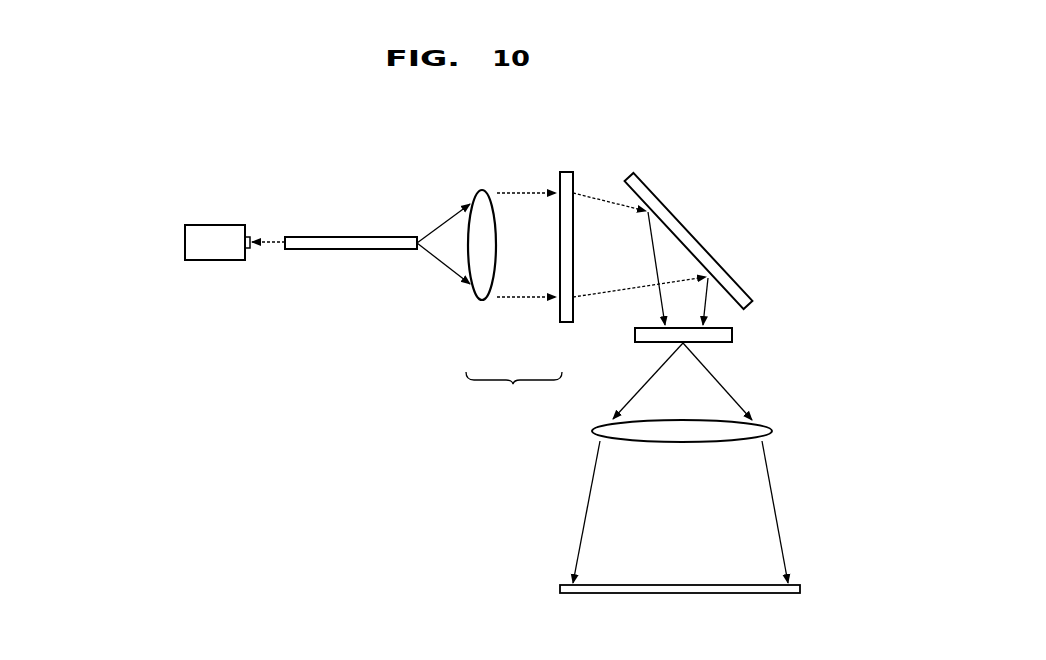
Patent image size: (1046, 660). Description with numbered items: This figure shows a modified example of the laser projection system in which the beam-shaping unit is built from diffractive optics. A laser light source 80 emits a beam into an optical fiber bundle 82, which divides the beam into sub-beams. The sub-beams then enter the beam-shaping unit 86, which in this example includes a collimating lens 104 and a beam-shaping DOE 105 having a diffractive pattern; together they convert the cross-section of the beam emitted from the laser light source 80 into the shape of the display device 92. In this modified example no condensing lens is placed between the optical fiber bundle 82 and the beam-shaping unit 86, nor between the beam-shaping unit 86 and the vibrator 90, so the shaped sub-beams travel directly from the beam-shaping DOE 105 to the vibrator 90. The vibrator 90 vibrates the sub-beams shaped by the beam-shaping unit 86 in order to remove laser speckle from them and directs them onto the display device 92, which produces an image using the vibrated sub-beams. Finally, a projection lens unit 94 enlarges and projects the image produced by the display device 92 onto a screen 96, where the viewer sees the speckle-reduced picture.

The laser light source 80 is at (222, 225).
The optical fiber bundle 82 is at (350, 237).
The collimating lens 104 is at (481, 301).
The beam-shaping DOE 105 is at (563, 323).
The beam-shaping unit 86 is at (514, 394).
The vibrator 90 is at (683, 232).
The display device 92 is at (735, 333).
The projection lens unit 94 is at (774, 432).
The screen 96 is at (558, 590).